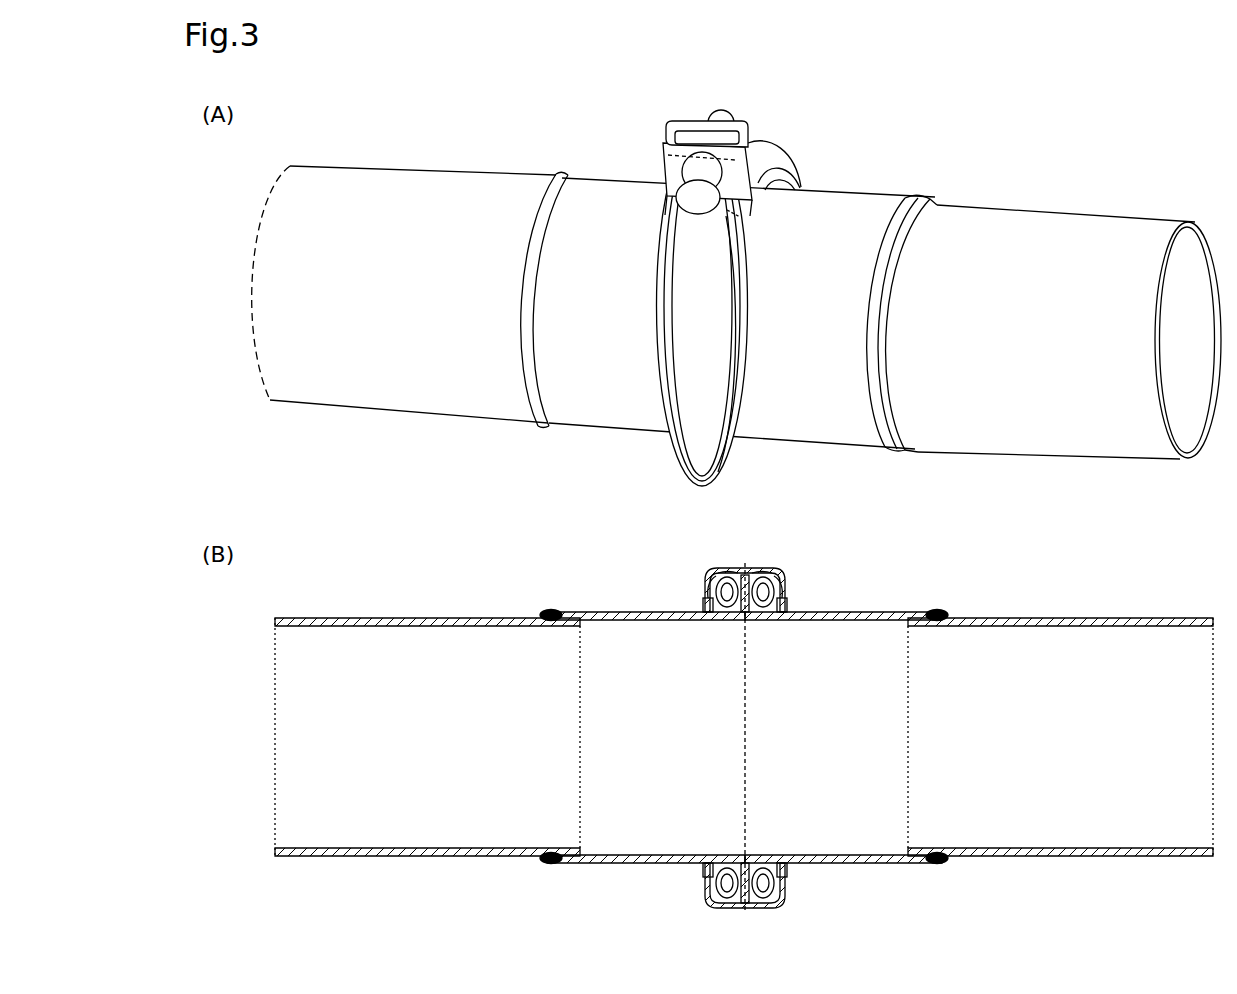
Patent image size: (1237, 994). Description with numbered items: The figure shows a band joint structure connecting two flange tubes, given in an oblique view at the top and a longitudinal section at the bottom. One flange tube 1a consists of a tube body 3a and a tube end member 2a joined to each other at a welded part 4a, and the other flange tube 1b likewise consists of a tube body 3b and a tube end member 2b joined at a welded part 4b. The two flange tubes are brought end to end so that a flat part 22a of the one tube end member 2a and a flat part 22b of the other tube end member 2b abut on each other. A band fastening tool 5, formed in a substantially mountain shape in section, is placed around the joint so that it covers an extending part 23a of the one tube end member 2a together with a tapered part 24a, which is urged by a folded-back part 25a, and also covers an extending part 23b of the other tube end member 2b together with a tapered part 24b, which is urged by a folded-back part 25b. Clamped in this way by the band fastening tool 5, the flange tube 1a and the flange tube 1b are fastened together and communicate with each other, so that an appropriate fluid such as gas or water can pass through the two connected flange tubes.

The flange tube 1a is at (416, 505).
The flange tube 1b is at (1064, 525).
The tube end member 2a is at (607, 178).
The tube end member 2b is at (845, 189).
The tube body 3a is at (380, 392).
The tube body 3b is at (1056, 436).
The welded part 4a is at (545, 428).
The welded part 4b is at (891, 446).
The band fastening tool 5 is at (697, 447).
The flat part 22a is at (786, 597).
The flat part 22b is at (708, 589).
The extending part 23a is at (728, 570).
The extending part 23b is at (750, 568).
The tapered part 24a is at (712, 578).
The tapered part 24b is at (774, 578).
The folded-back part 25a is at (708, 882).
The folded-back part 25b is at (784, 882).